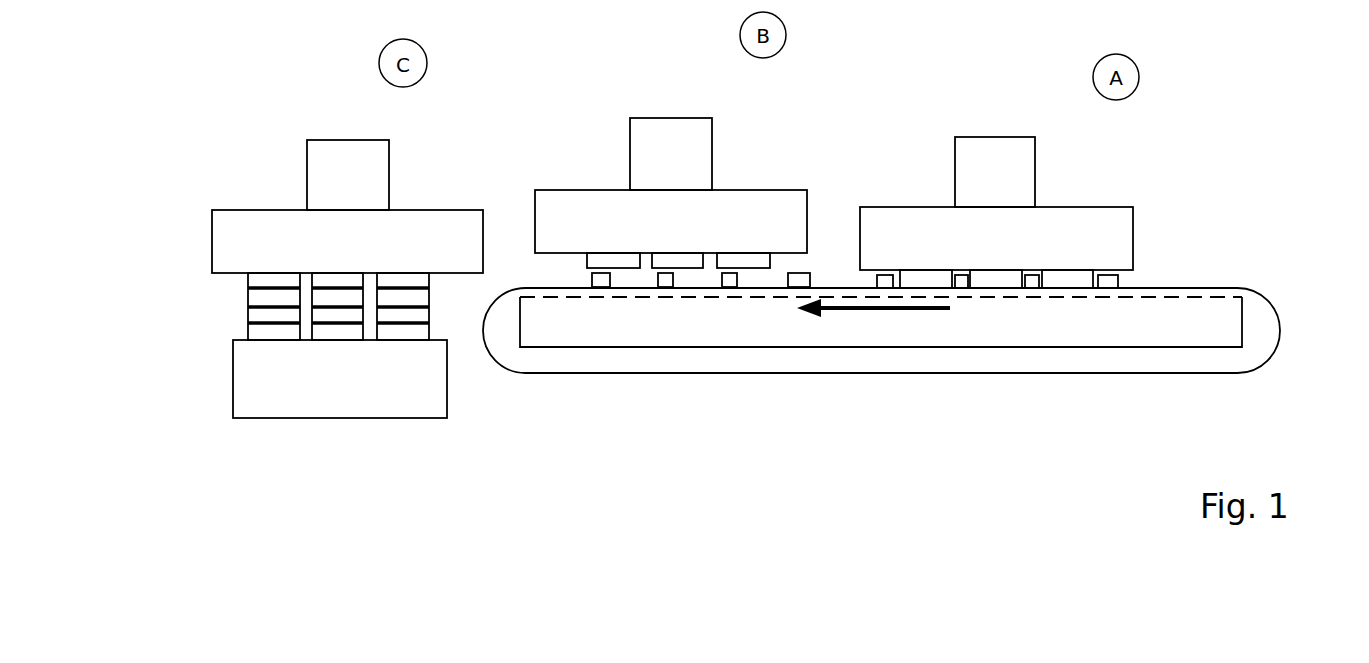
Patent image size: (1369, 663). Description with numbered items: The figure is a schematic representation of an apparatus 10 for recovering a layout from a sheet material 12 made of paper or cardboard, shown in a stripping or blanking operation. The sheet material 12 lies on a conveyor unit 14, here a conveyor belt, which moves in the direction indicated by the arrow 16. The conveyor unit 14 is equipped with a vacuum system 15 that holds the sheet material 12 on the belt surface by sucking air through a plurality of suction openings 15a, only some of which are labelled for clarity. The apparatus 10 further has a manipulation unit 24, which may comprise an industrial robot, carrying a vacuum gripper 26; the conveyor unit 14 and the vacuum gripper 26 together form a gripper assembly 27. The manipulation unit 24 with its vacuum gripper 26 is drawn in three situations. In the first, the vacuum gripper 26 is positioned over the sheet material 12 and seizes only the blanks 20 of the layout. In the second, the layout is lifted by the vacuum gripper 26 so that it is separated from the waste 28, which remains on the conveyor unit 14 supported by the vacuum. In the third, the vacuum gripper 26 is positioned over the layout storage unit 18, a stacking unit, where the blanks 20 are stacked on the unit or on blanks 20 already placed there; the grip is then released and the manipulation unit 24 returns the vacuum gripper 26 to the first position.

The apparatus 10 is at (1185, 125).
The sheet material 12 is at (1000, 304).
The conveyor unit 14 is at (1258, 288).
The vacuum system 15 is at (1212, 347).
The suction openings 15a is at (1170, 286).
The arrow 16 is at (885, 313).
The layout storage unit 18 is at (240, 357).
The blanks 20 is at (262, 297).
The manipulation unit 24 is at (328, 178).
The vacuum gripper 26 is at (231, 235).
The gripper assembly 27 is at (1252, 195).
The waste 28 is at (598, 290).